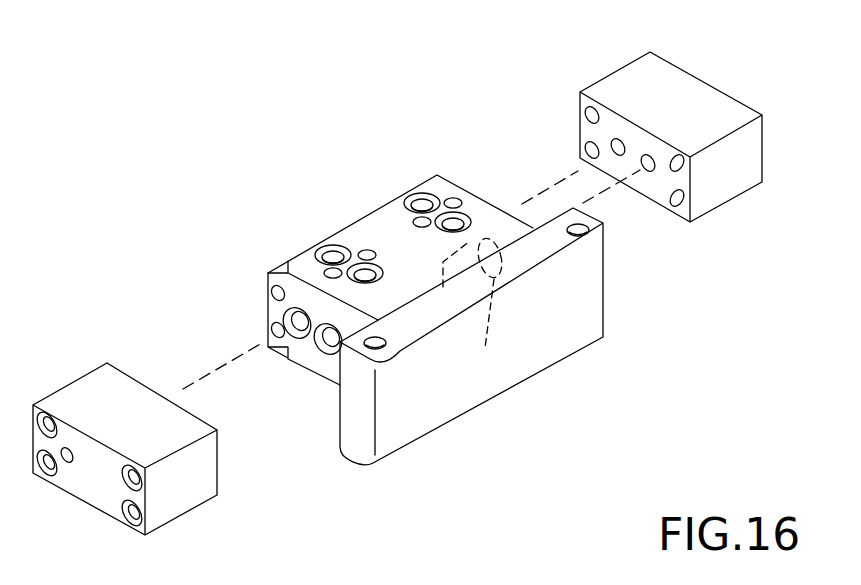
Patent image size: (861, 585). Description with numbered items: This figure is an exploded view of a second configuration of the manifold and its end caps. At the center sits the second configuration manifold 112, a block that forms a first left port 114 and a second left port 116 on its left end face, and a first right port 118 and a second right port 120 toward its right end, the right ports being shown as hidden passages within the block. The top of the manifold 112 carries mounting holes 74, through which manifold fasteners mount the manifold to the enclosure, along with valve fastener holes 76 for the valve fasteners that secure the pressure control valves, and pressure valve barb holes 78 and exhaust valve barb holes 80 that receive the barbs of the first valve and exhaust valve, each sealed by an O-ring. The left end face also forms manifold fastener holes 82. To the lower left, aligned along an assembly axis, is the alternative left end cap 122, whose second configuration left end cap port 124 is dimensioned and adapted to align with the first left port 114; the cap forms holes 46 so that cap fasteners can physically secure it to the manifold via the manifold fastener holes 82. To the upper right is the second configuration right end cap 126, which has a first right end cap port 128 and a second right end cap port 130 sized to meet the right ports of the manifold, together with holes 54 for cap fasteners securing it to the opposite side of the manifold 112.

The second configuration manifold 112 is at (568, 347).
The mounting holes 74 is at (382, 348).
The valve fastener holes 76 is at (365, 250).
The pressure valve barb holes 78 is at (318, 252).
The exhaust valve barb holes 80 is at (405, 197).
The manifold fastener holes 82 is at (272, 292).
The first left port 114 is at (270, 327).
The second left port 116 is at (315, 358).
The first right port 118 is at (443, 284).
The second right port 120 is at (486, 345).
The second configuration right end cap 126 is at (728, 107).
The holes 54 is at (588, 115).
The first right end cap port 128 is at (650, 160).
The second right end cap port 130 is at (621, 142).
The alternative left end cap 122 is at (177, 505).
The holes 46 is at (125, 475).
The hole 124 is at (75, 465).